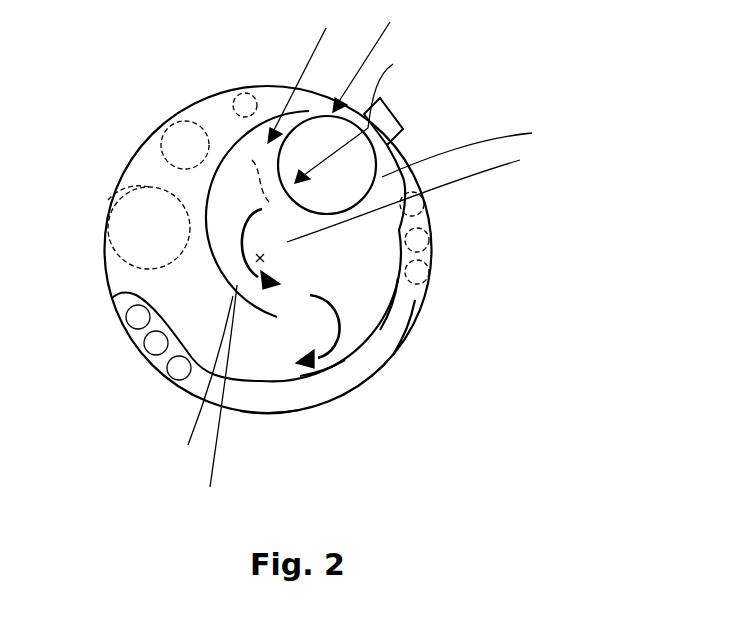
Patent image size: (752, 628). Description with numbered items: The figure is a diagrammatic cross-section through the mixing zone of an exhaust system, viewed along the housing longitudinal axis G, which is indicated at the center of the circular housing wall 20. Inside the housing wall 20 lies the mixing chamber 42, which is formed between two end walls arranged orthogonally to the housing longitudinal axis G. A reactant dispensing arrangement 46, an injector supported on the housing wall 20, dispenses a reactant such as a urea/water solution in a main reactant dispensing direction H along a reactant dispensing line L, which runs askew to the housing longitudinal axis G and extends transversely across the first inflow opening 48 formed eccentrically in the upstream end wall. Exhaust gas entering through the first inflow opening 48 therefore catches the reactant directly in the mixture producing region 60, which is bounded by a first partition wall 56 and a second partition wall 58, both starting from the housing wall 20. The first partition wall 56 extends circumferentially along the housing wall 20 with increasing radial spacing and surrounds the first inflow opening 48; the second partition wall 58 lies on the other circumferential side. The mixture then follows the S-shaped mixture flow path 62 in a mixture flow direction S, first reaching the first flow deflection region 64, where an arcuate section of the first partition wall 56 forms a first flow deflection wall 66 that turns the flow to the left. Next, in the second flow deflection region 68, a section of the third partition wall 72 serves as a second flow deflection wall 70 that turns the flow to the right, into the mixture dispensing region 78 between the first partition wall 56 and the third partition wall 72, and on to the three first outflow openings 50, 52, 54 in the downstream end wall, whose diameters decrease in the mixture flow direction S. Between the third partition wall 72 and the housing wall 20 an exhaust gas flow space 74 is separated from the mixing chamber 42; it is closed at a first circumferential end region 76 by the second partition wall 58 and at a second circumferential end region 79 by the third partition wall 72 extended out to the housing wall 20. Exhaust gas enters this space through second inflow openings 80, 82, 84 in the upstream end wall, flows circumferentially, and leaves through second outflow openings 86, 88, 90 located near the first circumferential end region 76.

The housing wall 20 is at (174, 114).
The mixing chamber 42 is at (314, 78).
The reactant dispensing arrangement 46 is at (403, 128).
The first inflow opening 48 is at (471, 145).
The first outflow opening 50 is at (102, 197).
The first outflow opening 52 is at (158, 124).
The first outflow opening 54 is at (243, 93).
The first partition wall 56 is at (282, 106).
The second partition wall 58 is at (419, 191).
The mixture producing region 60 is at (379, 60).
The mixture flow path 62 is at (359, 113).
The first flow deflection region 64 is at (212, 244).
The first flow deflection wall 66 is at (194, 380).
The second flow deflection region 68 is at (392, 289).
The second flow deflection wall 70 is at (402, 311).
The third partition wall 72 is at (322, 374).
The exhaust gas flow space 74 is at (268, 413).
The first circumferential end region 76 is at (428, 213).
The mixture dispensing region 78 is at (203, 396).
The second circumferential end region 79 is at (131, 337).
The second inflow opening 80 is at (124, 316).
The second inflow opening 82 is at (140, 362).
The second inflow opening 84 is at (168, 383).
The second outflow opening 86 is at (430, 275).
The second outflow opening 88 is at (430, 243).
The second outflow opening 90 is at (425, 205).
The main reactant dispensing direction H is at (377, 157).
The reactant dispensing line L is at (250, 172).
The mixture flow direction S is at (250, 259).
The housing longitudinal axis G is at (266, 258).